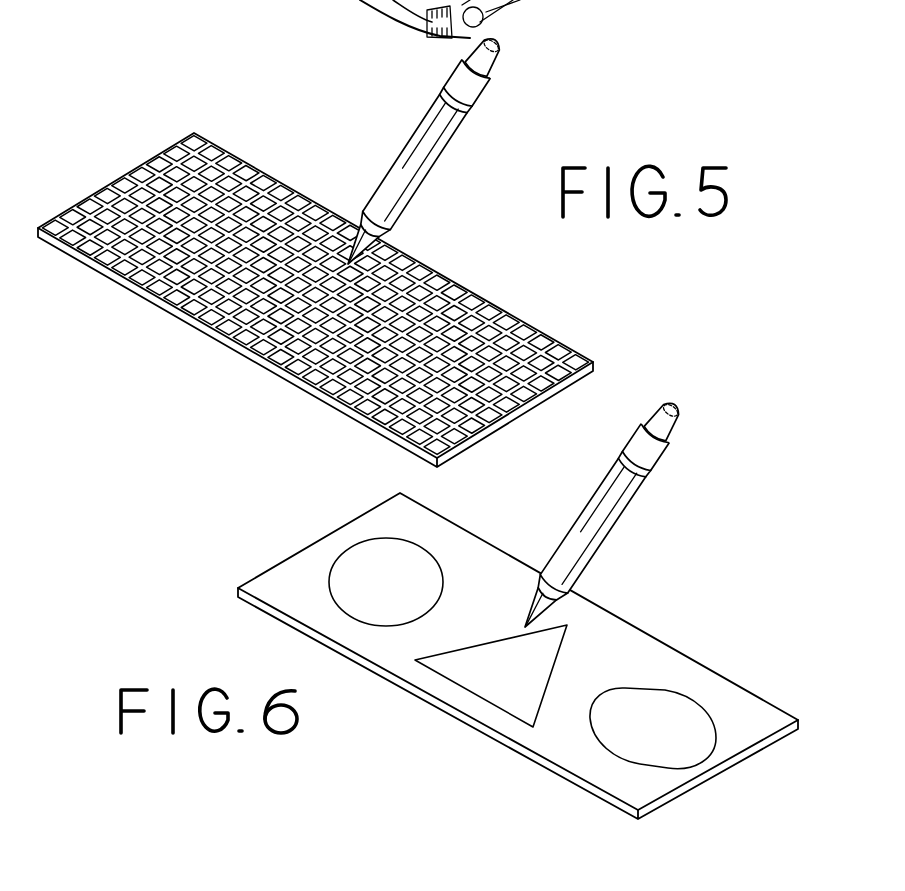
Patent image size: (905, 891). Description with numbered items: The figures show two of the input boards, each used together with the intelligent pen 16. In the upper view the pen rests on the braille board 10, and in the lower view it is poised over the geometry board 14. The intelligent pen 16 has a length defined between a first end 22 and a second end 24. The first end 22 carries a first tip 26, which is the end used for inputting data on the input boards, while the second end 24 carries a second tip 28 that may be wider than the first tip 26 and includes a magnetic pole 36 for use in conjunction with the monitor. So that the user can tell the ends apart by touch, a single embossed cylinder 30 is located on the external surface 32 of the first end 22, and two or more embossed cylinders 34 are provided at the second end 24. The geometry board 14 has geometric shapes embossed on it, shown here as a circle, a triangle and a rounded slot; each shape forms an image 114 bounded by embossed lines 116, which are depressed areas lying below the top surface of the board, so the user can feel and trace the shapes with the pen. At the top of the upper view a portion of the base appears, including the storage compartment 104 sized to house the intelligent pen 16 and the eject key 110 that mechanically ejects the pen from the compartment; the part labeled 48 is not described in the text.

In FIG. 5, the braille board 10 is at (170, 308).
In FIG. 6, the geometry board 14 is at (257, 578).
In FIG. 5, the intelligent pen 16 is at (455, 130).
In FIG. 6, the intelligent pen 16 is at (610, 515).
In FIG. 5, the first end 22 is at (390, 230).
In FIG. 6, the first end 22 is at (574, 583).
In FIG. 5, the second end 24 is at (482, 92).
In FIG. 6, the second end 24 is at (667, 442).
In FIG. 5, the first tip 26 is at (368, 260).
In FIG. 6, the first tip 26 is at (540, 617).
In FIG. 5, the second tip 28 is at (503, 42).
In FIG. 6, the second tip 28 is at (682, 398).
In FIG. 5, the embossed cylinder 30 is at (371, 208).
In FIG. 6, the embossed cylinder 30 is at (553, 572).
In FIG. 5, the external surface 32 is at (431, 136).
In FIG. 6, the external surface 32 is at (633, 494).
In FIG. 5, the embossed cylinders 34 is at (458, 93).
In FIG. 6, the embossed cylinders 34 is at (668, 468).
In FIG. 5, the magnetic pole 36 is at (487, 64).
In FIG. 6, the magnetic pole 36 is at (683, 410).
In FIG. 5, the fixture arm 48 is at (572, 0).
In FIG. 5, the storage compartment 104 is at (470, 28).
In FIG. 5, the eject key 110 is at (532, 22).
In FIG. 6, the image 114 is at (511, 631).
In FIG. 6, the embossed lines 116 is at (345, 615).